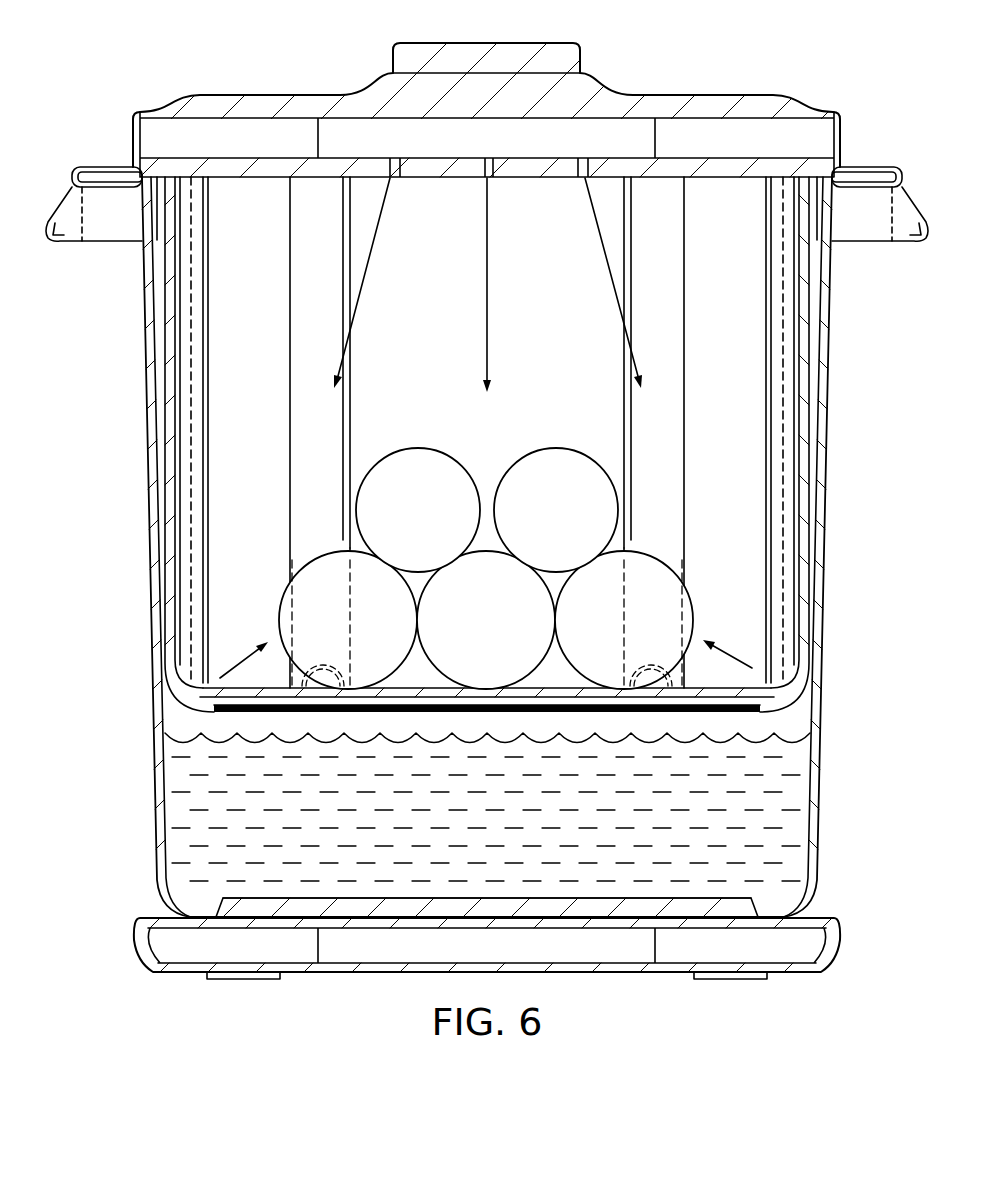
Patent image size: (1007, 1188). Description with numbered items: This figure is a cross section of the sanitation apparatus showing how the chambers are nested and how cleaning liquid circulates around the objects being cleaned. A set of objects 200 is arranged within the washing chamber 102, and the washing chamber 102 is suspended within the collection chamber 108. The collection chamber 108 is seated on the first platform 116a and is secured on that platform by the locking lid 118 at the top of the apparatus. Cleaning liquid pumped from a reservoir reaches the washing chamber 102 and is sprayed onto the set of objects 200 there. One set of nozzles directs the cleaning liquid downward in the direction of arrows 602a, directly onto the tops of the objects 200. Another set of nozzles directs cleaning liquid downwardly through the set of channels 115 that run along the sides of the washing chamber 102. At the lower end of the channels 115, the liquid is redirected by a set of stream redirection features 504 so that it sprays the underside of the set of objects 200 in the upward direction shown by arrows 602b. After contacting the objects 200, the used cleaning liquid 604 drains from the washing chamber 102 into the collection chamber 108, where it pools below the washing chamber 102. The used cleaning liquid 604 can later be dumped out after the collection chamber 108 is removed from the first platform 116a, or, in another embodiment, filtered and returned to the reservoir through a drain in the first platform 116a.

The washing chamber 102 is at (152, 434).
The collection chamber 108 is at (157, 824).
The set of channels 115 is at (192, 308).
The first platform 116a is at (158, 917).
The locking lid 118 is at (268, 94).
The set of objects 200 is at (567, 437).
The set of stream redirection features 504 is at (178, 682).
The arrows 602a is at (605, 255).
The arrows 602b is at (752, 668).
The used cleaning liquid 604 is at (182, 742).